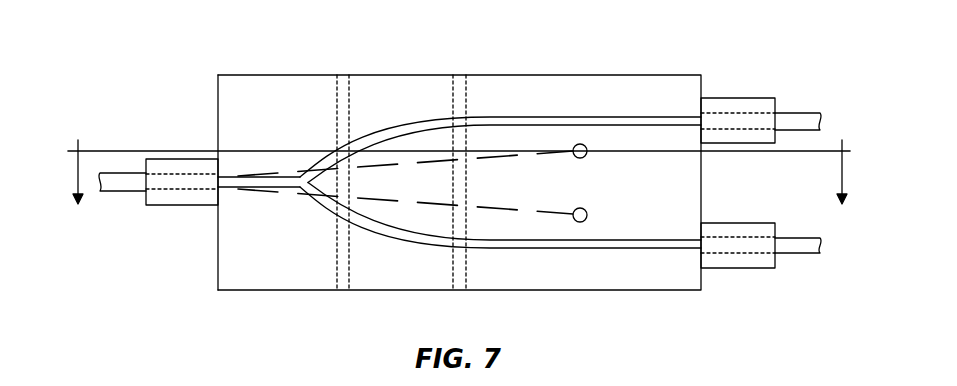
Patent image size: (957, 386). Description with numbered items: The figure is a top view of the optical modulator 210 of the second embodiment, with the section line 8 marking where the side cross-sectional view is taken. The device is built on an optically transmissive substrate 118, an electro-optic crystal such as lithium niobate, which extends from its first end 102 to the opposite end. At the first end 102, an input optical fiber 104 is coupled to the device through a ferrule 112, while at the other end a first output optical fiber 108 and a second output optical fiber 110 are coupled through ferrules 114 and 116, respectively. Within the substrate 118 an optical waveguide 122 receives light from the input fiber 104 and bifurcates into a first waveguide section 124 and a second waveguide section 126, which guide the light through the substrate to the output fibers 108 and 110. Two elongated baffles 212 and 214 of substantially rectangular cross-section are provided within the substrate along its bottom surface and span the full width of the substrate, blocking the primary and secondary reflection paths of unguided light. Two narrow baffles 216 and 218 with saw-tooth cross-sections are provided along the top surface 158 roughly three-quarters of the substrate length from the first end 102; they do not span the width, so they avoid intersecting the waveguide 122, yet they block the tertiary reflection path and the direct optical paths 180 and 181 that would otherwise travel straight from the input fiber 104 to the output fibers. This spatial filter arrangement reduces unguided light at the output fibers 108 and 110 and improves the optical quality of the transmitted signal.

The section line 8 is at (459, 184).
The first end 102 is at (217, 278).
The input optical fiber 104 is at (118, 191).
The first output optical fiber 108 is at (800, 113).
The second output optical fiber 110 is at (800, 253).
The ferrule 112 is at (176, 205).
The ferrule 114 is at (735, 98).
The ferrule 116 is at (735, 268).
The optically transmissive substrate 118 is at (222, 84).
The optical waveguide 122 is at (232, 176).
The first waveguide section 124 is at (488, 117).
The second waveguide section 126 is at (560, 252).
The top surface 158 is at (688, 103).
The direct optical path 180 is at (437, 159).
The direct optical path 181 is at (497, 208).
The optical modulator 210 is at (566, 49).
The baffle 212 is at (340, 290).
The baffle 214 is at (455, 290).
The narrow baffle 216 is at (587, 149).
The narrow baffle 218 is at (587, 213).